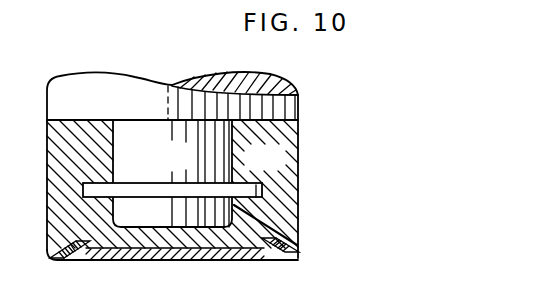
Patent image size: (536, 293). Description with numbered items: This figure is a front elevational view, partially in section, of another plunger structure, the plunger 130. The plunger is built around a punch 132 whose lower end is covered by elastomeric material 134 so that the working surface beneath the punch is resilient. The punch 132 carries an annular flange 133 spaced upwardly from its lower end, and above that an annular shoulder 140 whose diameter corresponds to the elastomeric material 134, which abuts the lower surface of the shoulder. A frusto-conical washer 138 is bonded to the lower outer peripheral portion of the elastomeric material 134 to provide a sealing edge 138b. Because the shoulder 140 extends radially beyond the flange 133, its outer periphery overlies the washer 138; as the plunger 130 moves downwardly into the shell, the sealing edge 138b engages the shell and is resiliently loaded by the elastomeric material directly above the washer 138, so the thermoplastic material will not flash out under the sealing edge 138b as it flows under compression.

The plunger 130 is at (326, 130).
The punch 132 is at (192, 168).
The annular flange 133 is at (262, 186).
The elastomeric material 134 is at (282, 168).
The washer 138 is at (298, 243).
The sealing edge 138b is at (299, 251).
The annular shoulder 140 is at (152, 108).